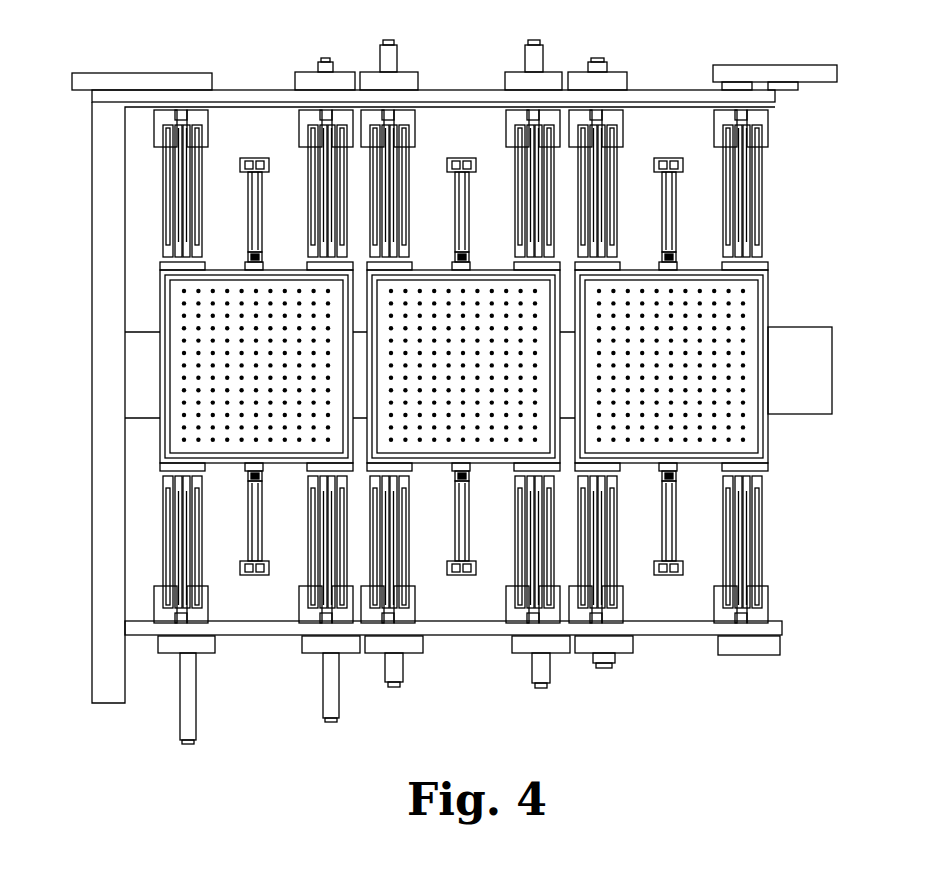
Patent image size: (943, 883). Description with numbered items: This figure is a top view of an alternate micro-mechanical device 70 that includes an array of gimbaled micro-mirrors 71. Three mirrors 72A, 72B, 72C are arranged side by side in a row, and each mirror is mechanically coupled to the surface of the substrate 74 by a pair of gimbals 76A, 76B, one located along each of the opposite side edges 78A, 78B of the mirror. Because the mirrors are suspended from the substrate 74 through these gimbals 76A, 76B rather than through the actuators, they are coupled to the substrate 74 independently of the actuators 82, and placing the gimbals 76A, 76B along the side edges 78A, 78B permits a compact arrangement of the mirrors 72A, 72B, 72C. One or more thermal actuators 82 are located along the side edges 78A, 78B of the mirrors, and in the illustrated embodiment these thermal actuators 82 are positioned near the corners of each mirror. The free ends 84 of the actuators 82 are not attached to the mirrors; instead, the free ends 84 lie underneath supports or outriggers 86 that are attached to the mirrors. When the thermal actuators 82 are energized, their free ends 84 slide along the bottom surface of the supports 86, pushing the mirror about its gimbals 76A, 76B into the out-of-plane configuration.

The micro-mechanical device 70 is at (790, 556).
The array of gimbaled micro-mirrors 71 is at (774, 303).
The mirror 72A is at (175, 387).
The mirror 72B is at (425, 283).
The mirror 72C is at (753, 295).
The substrate 74 is at (606, 719).
The gimbal 76A is at (670, 192).
The gimbal 76B is at (673, 528).
The side edge 78A is at (703, 263).
The side edge 78B is at (727, 482).
The thermal actuator 82 is at (608, 163).
The free end 84 is at (167, 256).
The support 86 is at (160, 266).